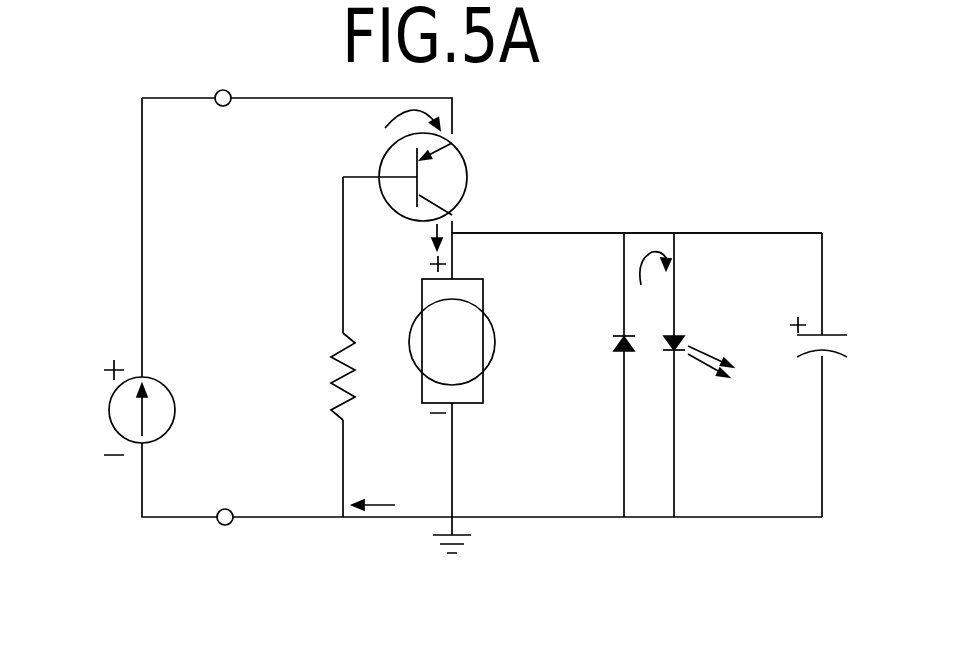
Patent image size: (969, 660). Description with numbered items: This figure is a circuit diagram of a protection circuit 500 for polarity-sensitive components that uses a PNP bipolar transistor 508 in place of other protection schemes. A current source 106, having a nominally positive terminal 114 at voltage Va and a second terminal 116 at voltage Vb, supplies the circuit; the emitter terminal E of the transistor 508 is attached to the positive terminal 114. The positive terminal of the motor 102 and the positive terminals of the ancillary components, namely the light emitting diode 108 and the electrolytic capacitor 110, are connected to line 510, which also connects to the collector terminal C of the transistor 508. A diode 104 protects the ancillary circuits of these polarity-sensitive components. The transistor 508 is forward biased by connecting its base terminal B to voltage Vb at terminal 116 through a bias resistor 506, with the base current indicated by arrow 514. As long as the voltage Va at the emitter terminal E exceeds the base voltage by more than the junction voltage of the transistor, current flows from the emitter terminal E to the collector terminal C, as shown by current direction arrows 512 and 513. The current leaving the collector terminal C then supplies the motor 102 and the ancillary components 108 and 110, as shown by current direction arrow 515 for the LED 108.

The motor 102 is at (483, 292).
The diode 104 is at (632, 353).
The current source 106 is at (150, 438).
The light emitting diode 108 is at (686, 340).
The electrolytic capacitor 110 is at (824, 336).
The nominally positive terminal 114 is at (222, 90).
The terminal 116 is at (226, 526).
The circuit 500 is at (780, 214).
The bias resistor 506 is at (331, 398).
The PNP bipolar transistor 508 is at (467, 162).
The line 510 is at (660, 232).
The current direction arrow 512 is at (392, 125).
The current direction arrow 513 is at (437, 235).
The bias current 514 is at (375, 503).
The current direction arrow 515 is at (650, 280).